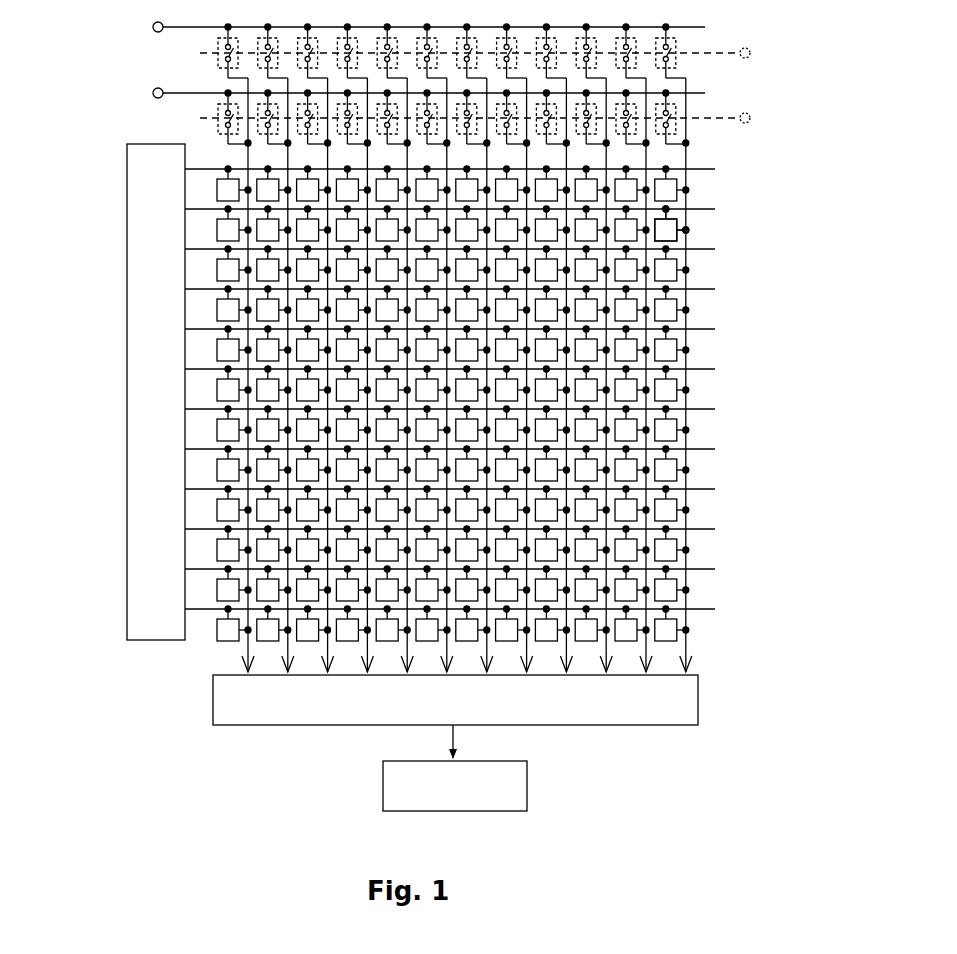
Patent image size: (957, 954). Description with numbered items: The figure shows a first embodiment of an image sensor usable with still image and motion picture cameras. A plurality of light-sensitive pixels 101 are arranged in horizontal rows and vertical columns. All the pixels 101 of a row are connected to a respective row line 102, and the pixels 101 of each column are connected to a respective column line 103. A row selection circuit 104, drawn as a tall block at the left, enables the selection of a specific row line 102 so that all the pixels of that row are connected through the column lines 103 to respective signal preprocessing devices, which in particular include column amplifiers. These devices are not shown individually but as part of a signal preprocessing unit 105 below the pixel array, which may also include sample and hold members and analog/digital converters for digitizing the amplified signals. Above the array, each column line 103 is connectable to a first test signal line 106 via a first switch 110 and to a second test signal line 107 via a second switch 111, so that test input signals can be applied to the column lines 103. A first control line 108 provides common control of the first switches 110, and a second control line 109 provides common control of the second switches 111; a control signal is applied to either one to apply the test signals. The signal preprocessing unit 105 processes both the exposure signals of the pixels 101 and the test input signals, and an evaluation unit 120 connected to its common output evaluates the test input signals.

The light-sensitive pixel 101 is at (690, 221).
The row line 102 is at (721, 293).
The column line 103 is at (694, 420).
The row selection circuit 104 is at (123, 228).
The signal preprocessing unit 105 is at (209, 693).
The first test signal line 106 is at (148, 23).
The second test signal line 107 is at (148, 89).
The first control line 108 is at (758, 58).
The second control line 109 is at (758, 123).
The first switch 110 is at (212, 62).
The second switch 111 is at (212, 135).
The evaluation unit 120 is at (378, 783).